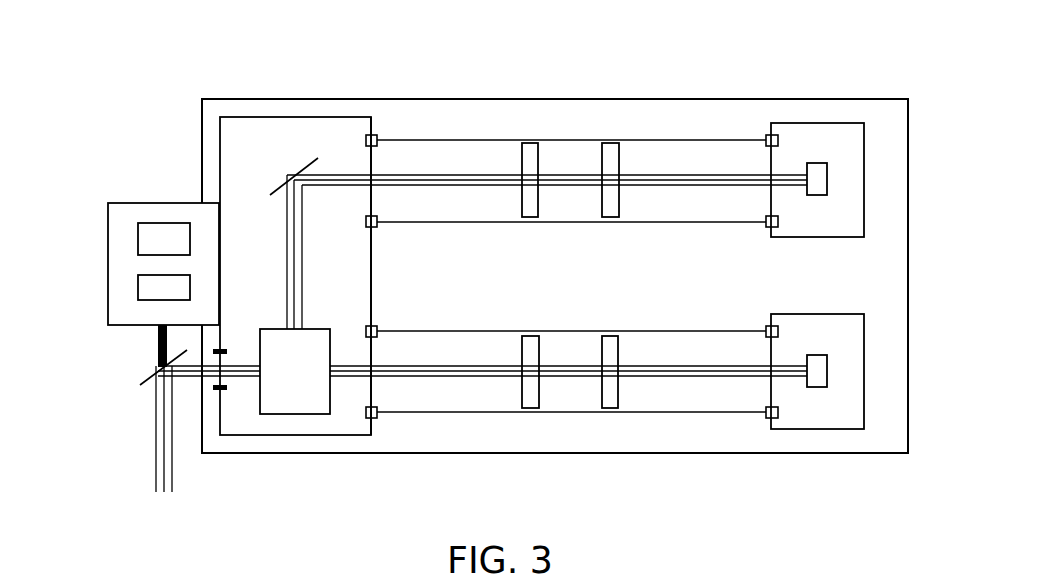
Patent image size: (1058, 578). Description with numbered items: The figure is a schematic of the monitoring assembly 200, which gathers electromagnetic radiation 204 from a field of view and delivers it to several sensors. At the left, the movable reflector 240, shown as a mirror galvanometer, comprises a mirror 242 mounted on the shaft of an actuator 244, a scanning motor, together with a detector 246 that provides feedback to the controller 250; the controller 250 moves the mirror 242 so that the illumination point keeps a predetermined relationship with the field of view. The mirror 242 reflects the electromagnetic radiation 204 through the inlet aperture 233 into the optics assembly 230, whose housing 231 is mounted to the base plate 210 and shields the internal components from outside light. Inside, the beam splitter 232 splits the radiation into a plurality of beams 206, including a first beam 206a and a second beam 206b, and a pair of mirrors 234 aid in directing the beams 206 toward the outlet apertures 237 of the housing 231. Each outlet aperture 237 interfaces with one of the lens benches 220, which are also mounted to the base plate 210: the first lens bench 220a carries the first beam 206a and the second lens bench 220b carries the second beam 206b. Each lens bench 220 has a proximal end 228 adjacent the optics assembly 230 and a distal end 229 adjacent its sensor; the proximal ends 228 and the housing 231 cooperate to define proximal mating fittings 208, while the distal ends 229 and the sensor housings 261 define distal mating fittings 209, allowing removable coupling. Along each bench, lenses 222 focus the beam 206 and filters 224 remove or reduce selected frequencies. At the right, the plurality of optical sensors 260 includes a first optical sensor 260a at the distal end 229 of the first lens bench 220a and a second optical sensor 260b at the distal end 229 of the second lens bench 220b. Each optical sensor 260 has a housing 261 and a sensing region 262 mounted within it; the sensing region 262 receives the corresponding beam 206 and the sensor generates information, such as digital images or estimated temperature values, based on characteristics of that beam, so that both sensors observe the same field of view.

The monitoring assembly 200 is at (475, 32).
The electromagnetic radiation 204 is at (146, 449).
The beams 206 is at (348, 346).
The first beam 206a is at (415, 175).
The second beam 206b is at (415, 365).
The proximal mating fittings 208 is at (369, 134).
The distal mating fittings 209 is at (750, 131).
The base plate 210 is at (655, 455).
The lens benches 220 is at (533, 233).
The first lens bench 220a is at (472, 137).
The second lens bench 220b is at (472, 330).
The lenses 222 is at (541, 157).
The filters 224 is at (621, 157).
The proximal end 228 is at (386, 225).
The distal end 229 is at (748, 231).
The optics assembly 230 is at (255, 446).
The housing 231 is at (272, 117).
The beam splitter 232 is at (287, 414).
The inlet aperture 233 is at (228, 359).
The mirrors 234 is at (305, 158).
The outlet apertures 237 is at (362, 153).
The movable reflector 240 is at (88, 226).
The mirror 242 is at (143, 373).
The actuator 244 is at (108, 243).
The detector 246 is at (138, 282).
The controller 250 is at (162, 222).
The optical sensors 260 is at (919, 327).
The first optical sensor 260a is at (884, 121).
The second optical sensor 260b is at (884, 424).
The housing 261 is at (824, 123).
The sensing region 262 is at (827, 188).